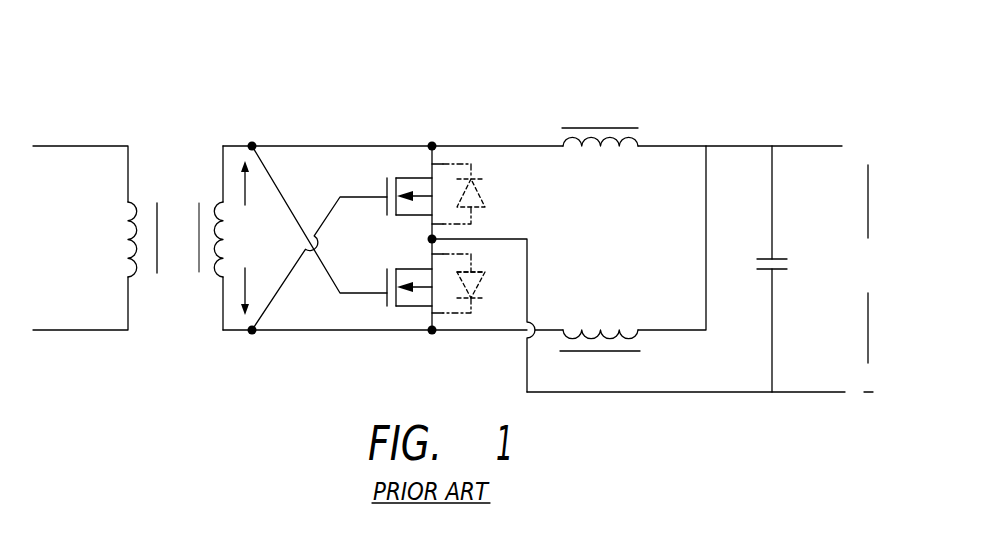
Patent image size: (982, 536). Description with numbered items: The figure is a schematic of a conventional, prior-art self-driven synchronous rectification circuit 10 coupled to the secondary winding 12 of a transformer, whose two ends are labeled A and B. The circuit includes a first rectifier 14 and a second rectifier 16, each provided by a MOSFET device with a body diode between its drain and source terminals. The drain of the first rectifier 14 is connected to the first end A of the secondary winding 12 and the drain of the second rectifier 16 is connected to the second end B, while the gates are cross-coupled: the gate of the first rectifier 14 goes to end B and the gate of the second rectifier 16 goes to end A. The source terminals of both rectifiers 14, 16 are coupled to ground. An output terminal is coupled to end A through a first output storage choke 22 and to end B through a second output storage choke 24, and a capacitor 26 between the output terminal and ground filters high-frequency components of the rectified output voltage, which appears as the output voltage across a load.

The self-driven synchronous rectification circuit 10 is at (309, 97).
The secondary winding 12 is at (218, 278).
The first rectifier 14 is at (412, 178).
The second rectifier 16 is at (412, 306).
The first output storage choke 22 is at (626, 128).
The second output storage choke 24 is at (640, 333).
The capacitor 26 is at (778, 258).